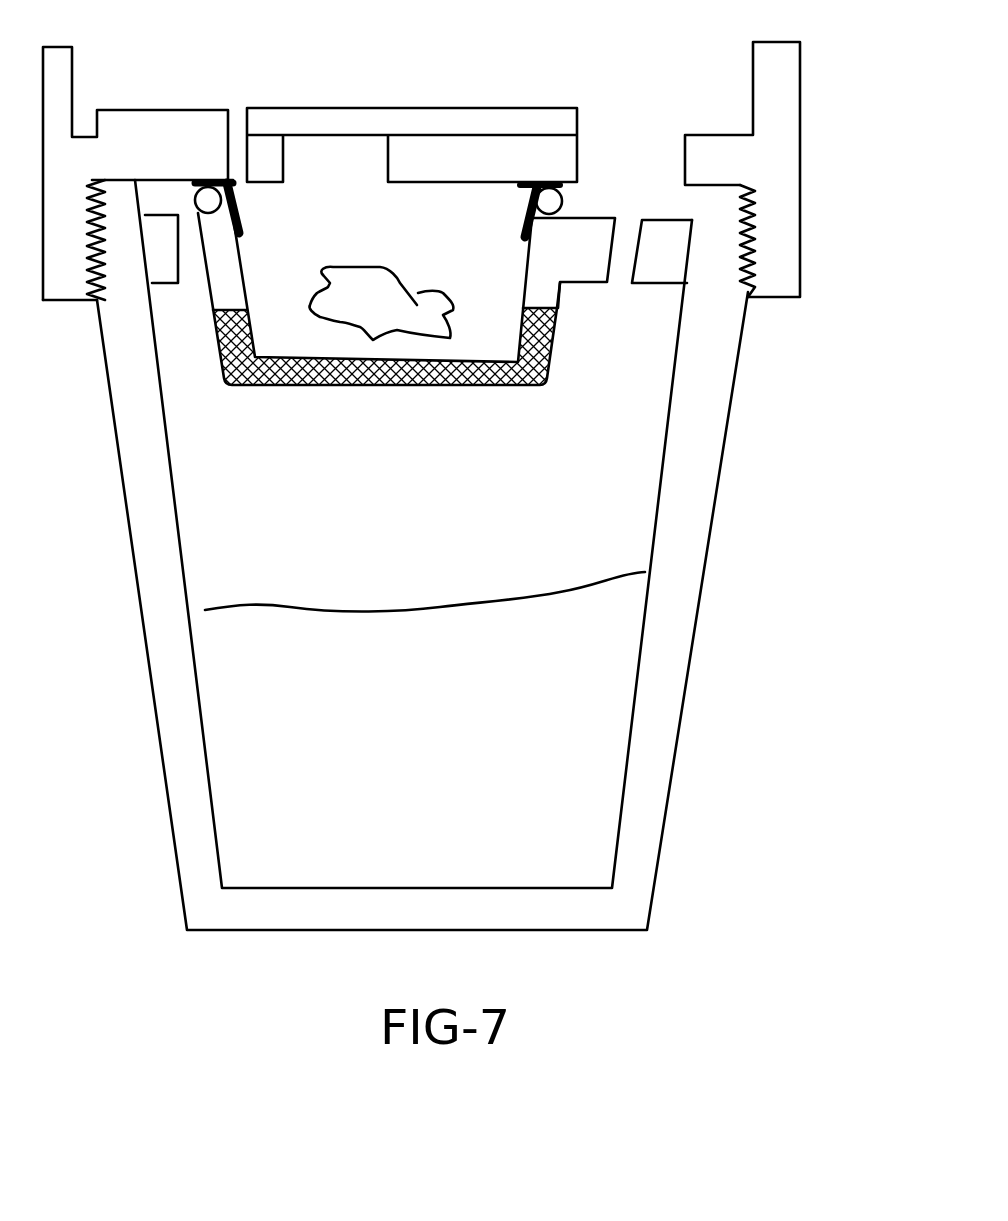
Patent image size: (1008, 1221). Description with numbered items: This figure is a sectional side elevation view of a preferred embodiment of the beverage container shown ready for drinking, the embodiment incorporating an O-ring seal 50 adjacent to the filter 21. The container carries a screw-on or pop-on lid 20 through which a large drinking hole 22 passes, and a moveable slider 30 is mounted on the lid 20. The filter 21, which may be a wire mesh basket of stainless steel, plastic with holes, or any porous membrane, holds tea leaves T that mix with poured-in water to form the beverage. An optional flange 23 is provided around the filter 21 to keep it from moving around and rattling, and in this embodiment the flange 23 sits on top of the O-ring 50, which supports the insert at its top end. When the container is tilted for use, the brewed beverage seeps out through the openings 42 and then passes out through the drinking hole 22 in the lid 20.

The lid 20 is at (785, 115).
The filter 21 is at (400, 385).
The drinking hole 22 is at (636, 170).
The flange 23 is at (238, 206).
The slider 30 is at (334, 105).
The openings 42 is at (621, 317).
The O-ring seal 50 is at (207, 187).
The tea leaves T is at (357, 310).